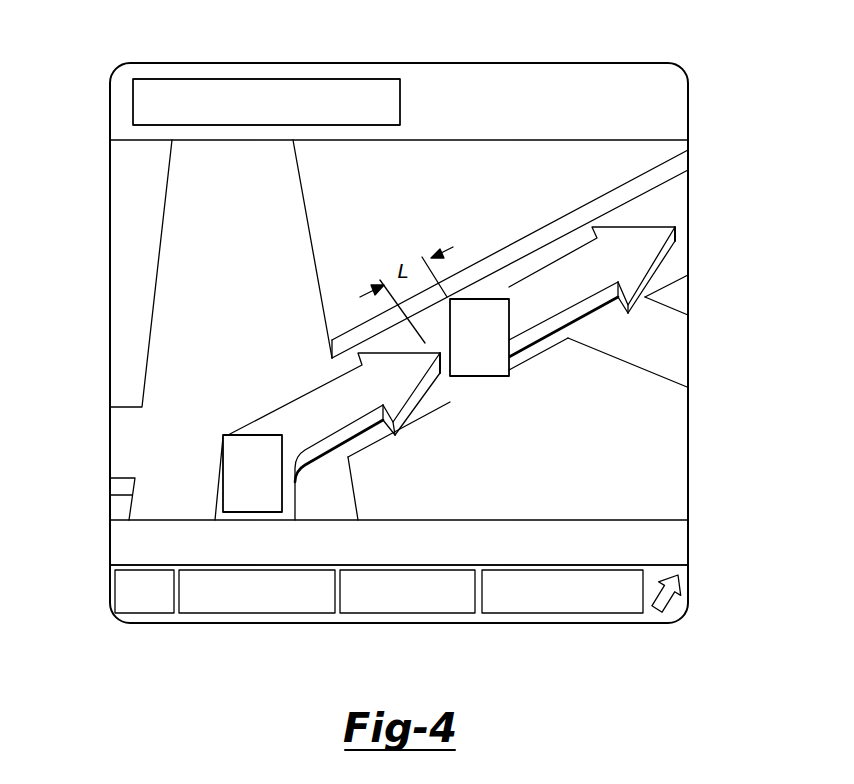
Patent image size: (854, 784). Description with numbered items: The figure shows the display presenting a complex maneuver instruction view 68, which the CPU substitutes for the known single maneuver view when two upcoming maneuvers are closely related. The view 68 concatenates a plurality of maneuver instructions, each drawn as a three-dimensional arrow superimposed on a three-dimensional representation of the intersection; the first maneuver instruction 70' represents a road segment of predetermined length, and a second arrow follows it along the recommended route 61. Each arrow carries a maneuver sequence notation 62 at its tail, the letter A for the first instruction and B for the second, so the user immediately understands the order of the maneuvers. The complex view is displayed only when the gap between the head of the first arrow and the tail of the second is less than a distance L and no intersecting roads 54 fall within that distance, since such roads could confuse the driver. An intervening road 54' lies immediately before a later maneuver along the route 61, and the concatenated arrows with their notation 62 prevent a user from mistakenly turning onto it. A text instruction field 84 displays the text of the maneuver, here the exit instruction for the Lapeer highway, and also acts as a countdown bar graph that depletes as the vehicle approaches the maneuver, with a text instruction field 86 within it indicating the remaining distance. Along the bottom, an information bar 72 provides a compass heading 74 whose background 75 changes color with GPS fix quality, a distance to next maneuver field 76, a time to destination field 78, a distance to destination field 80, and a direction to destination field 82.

The complex maneuver instruction view 68 is at (90, 187).
The text instruction field 84 is at (207, 72).
The text instruction field 86 is at (365, 86).
The intersecting road 54 is at (235, 330).
The intervening road 54' is at (632, 331).
The recommended route 61 is at (672, 203).
The first maneuver instruction 70' is at (332, 429).
The maneuver sequence notation 62 is at (250, 435).
The information bar 72 is at (706, 589).
The compass heading 74 is at (155, 613).
The background 75 is at (118, 597).
The distance to next maneuver field 76 is at (257, 613).
The time to destination field 78 is at (365, 613).
The distance to destination field 80 is at (528, 613).
The direction to destination field 82 is at (655, 616).